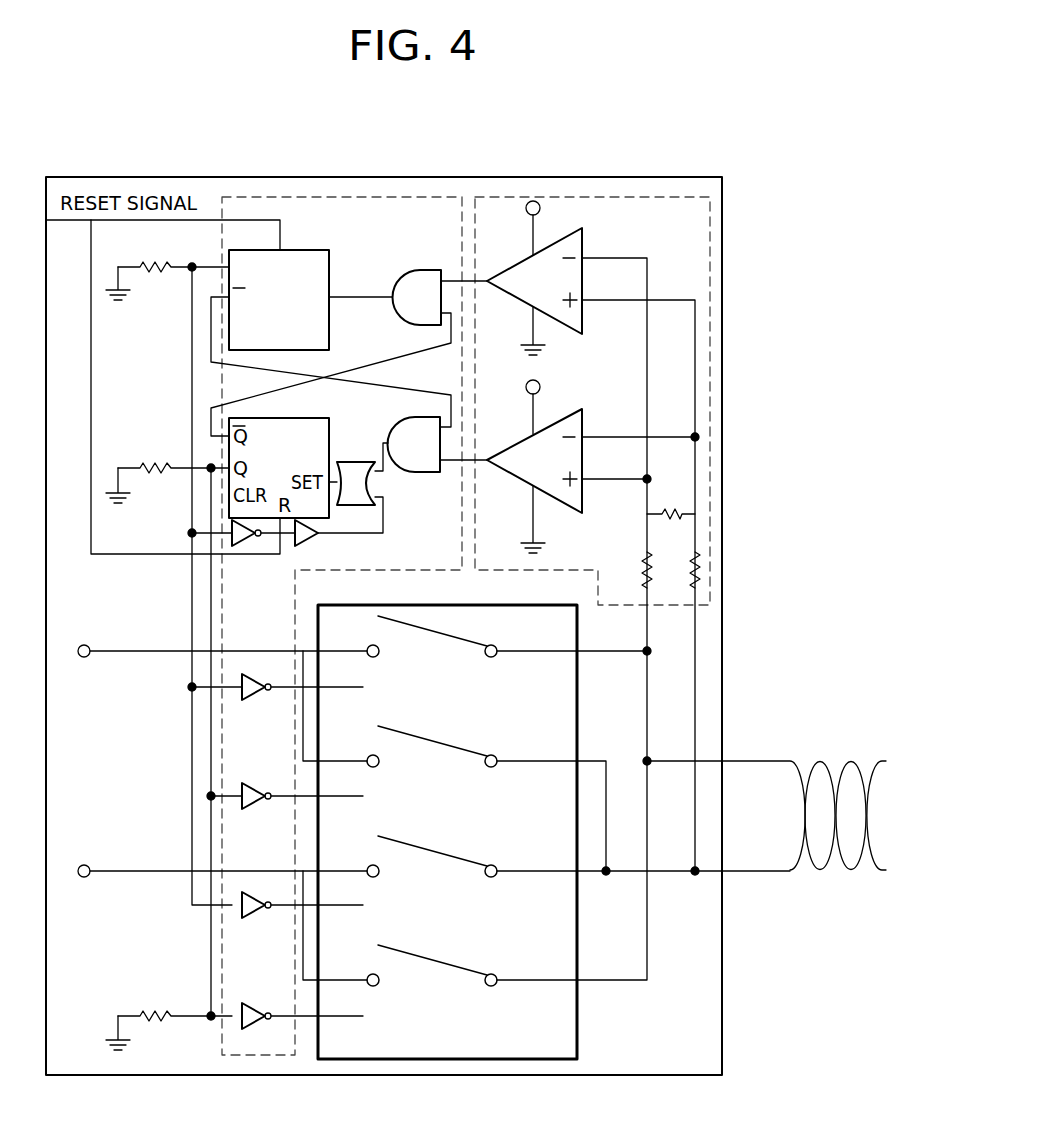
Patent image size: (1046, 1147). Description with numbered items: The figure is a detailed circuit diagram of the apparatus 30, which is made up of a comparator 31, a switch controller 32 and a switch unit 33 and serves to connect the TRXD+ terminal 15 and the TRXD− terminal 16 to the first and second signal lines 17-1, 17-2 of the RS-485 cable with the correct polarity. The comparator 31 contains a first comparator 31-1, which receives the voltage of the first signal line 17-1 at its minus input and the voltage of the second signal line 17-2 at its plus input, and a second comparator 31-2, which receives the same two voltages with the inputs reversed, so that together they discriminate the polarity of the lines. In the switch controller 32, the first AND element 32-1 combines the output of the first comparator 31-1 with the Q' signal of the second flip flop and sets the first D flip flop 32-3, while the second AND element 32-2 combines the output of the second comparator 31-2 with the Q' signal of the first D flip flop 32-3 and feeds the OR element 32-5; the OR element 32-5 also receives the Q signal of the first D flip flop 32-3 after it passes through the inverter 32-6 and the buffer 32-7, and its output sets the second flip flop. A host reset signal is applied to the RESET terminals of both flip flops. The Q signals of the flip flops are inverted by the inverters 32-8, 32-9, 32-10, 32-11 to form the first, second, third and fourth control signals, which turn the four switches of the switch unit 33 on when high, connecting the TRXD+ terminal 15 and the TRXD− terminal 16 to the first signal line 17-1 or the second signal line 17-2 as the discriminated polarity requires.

The apparatus 30 is at (700, 177).
The comparator 31 is at (498, 197).
The first comparator 31-1 is at (582, 240).
The second comparator 31-2 is at (582, 410).
The switch controller 32 is at (238, 197).
The first AND element 32-1 is at (410, 270).
The second AND element 32-2 is at (427, 472).
The first D flip flop 32-3 is at (317, 250).
The OR element 32-5 is at (352, 462).
The inverter 32-6 is at (248, 546).
The buffer 32-7 is at (312, 545).
The inverter 32-8 is at (253, 700).
The inverter 32-9 is at (253, 809).
The inverter 32-10 is at (253, 918).
The inverter 32-11 is at (258, 990).
The switch unit 33 is at (578, 1032).
The TRXD+ terminal 15 is at (84, 645).
The TRXD− terminal 16 is at (84, 865).
The first signal line 17-1 is at (755, 761).
The second signal line 17-2 is at (755, 870).